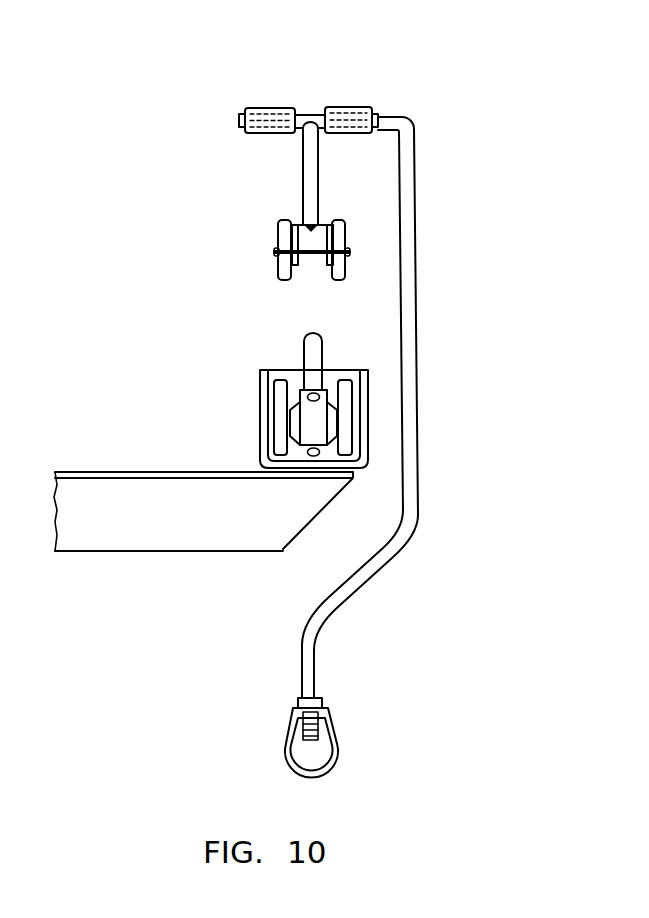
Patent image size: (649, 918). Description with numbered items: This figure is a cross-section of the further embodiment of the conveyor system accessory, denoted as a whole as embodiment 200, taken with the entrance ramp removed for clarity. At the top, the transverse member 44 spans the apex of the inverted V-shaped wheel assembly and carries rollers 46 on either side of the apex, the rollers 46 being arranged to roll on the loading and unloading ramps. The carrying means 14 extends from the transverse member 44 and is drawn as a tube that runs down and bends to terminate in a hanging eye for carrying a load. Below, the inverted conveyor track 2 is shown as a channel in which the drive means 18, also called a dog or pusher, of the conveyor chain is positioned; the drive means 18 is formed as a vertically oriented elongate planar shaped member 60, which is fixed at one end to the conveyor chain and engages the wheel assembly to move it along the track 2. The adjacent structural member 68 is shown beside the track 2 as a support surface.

The further embodiment 200 is at (476, 127).
The transverse member 44 is at (308, 110).
The rollers 46 is at (365, 104).
The carrying means 14 is at (418, 530).
The vertically oriented elongate planar shaped member 60 is at (320, 336).
The drive means 18 is at (305, 352).
The inverted conveyor track 2 is at (363, 386).
The frame member 68 is at (147, 528).